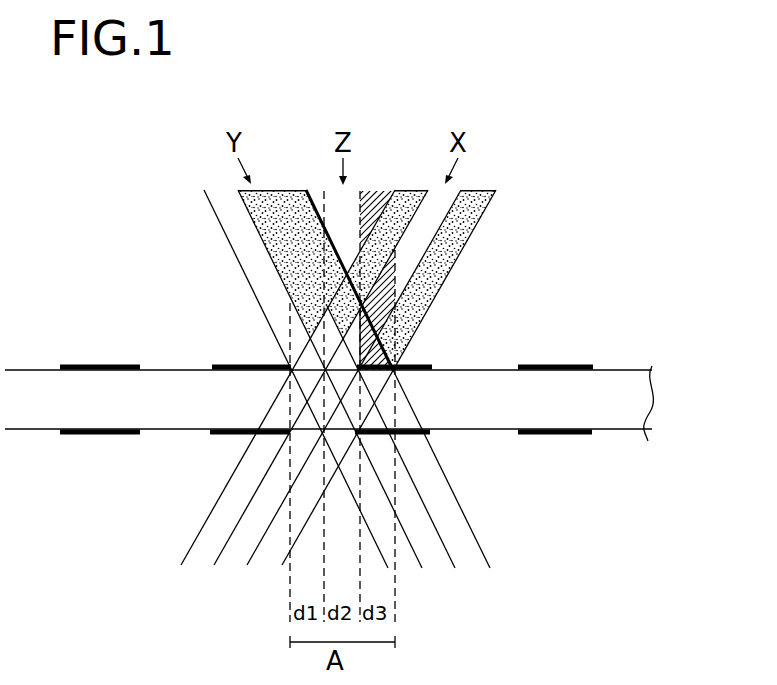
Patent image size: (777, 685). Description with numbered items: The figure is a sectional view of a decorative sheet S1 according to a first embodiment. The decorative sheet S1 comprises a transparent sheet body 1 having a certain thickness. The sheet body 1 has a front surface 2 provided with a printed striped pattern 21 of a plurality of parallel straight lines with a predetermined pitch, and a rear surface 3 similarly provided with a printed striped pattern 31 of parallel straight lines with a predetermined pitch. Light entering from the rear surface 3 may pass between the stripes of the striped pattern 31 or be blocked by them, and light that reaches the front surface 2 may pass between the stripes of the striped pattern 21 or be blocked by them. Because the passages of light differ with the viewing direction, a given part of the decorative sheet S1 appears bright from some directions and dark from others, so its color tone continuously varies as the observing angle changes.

The transparent sheet body 1 is at (359, 403).
The front surface 2 is at (328, 340).
The printed striped pattern 21 is at (545, 366).
The rear surface 3 is at (328, 463).
The printed striped pattern 31 is at (543, 435).
The decorative sheet S1 is at (500, 326).